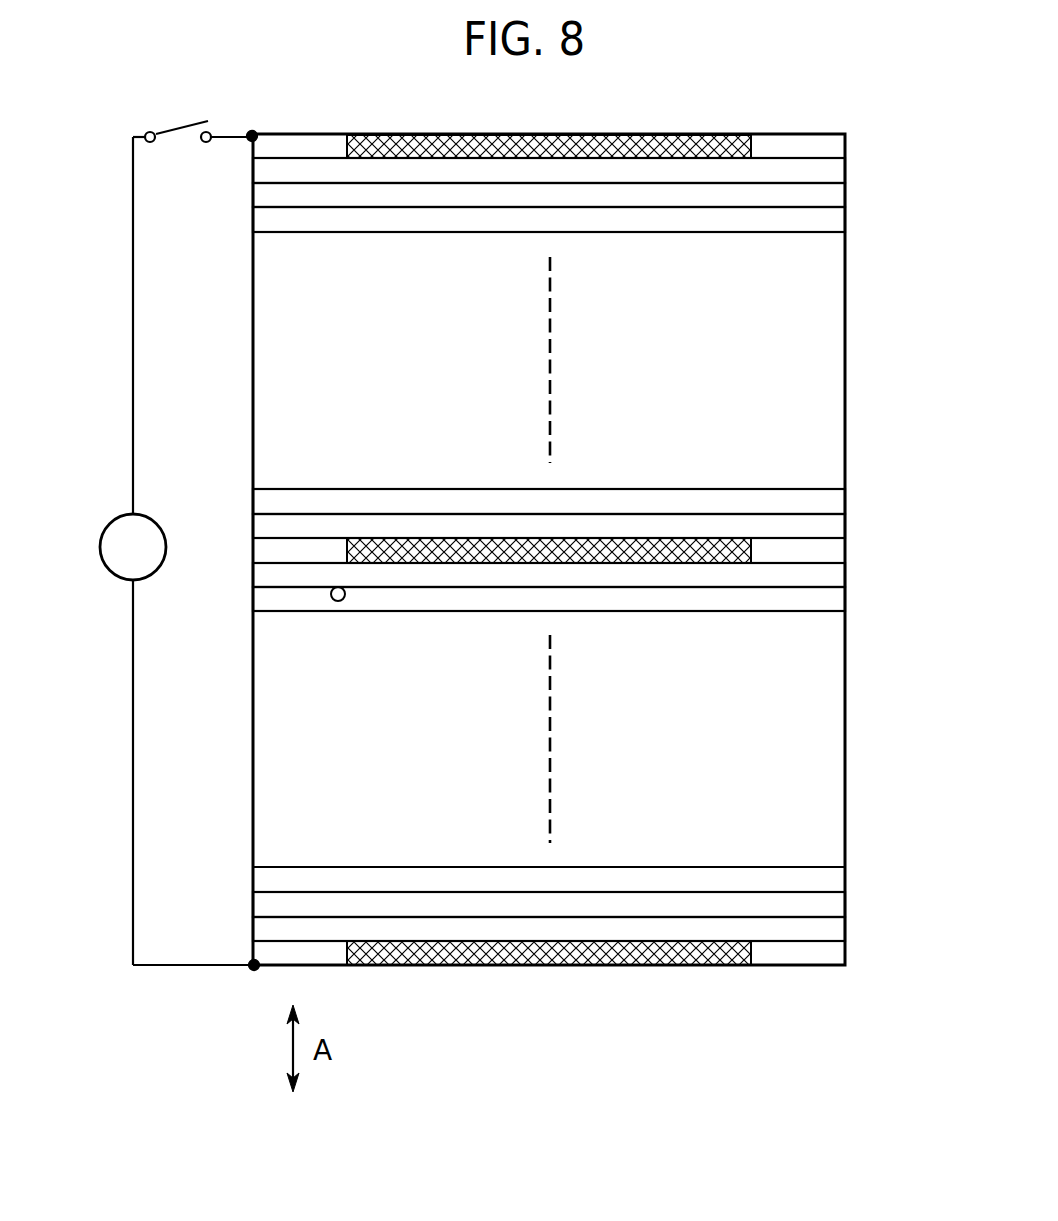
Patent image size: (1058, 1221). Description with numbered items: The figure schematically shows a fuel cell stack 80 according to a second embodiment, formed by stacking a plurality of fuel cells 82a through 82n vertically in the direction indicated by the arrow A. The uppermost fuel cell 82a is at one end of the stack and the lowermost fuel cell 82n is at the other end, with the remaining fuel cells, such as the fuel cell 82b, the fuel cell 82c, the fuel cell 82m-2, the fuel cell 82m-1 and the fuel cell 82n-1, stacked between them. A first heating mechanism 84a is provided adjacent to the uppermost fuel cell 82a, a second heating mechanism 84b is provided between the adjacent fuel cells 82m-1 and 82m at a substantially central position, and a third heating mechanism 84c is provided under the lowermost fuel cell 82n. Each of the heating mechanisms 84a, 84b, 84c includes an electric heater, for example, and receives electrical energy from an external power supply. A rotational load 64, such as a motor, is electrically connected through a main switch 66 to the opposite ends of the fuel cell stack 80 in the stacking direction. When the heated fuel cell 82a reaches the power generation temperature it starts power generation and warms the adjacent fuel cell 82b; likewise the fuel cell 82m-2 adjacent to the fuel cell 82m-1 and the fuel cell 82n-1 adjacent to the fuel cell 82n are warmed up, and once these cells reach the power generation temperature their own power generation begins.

The fuel cell stack 80 is at (728, 76).
The uppermost fuel cell 82a is at (833, 176).
The fuel cell 82b is at (833, 199).
The fuel cell 82c is at (833, 226).
The fuel cell 82m-2 is at (833, 501).
The fuel cell 82m-1 is at (833, 522).
The fuel cell 82m is at (833, 578).
The fuel cell 82n-1 is at (835, 903).
The lowermost fuel cell 82n is at (836, 924).
The first heating mechanism 84a is at (629, 134).
The second heating mechanism 84b is at (621, 538).
The third heating mechanism 84c is at (628, 967).
The main switch 66 is at (178, 124).
The rotational load 64 is at (100, 549).